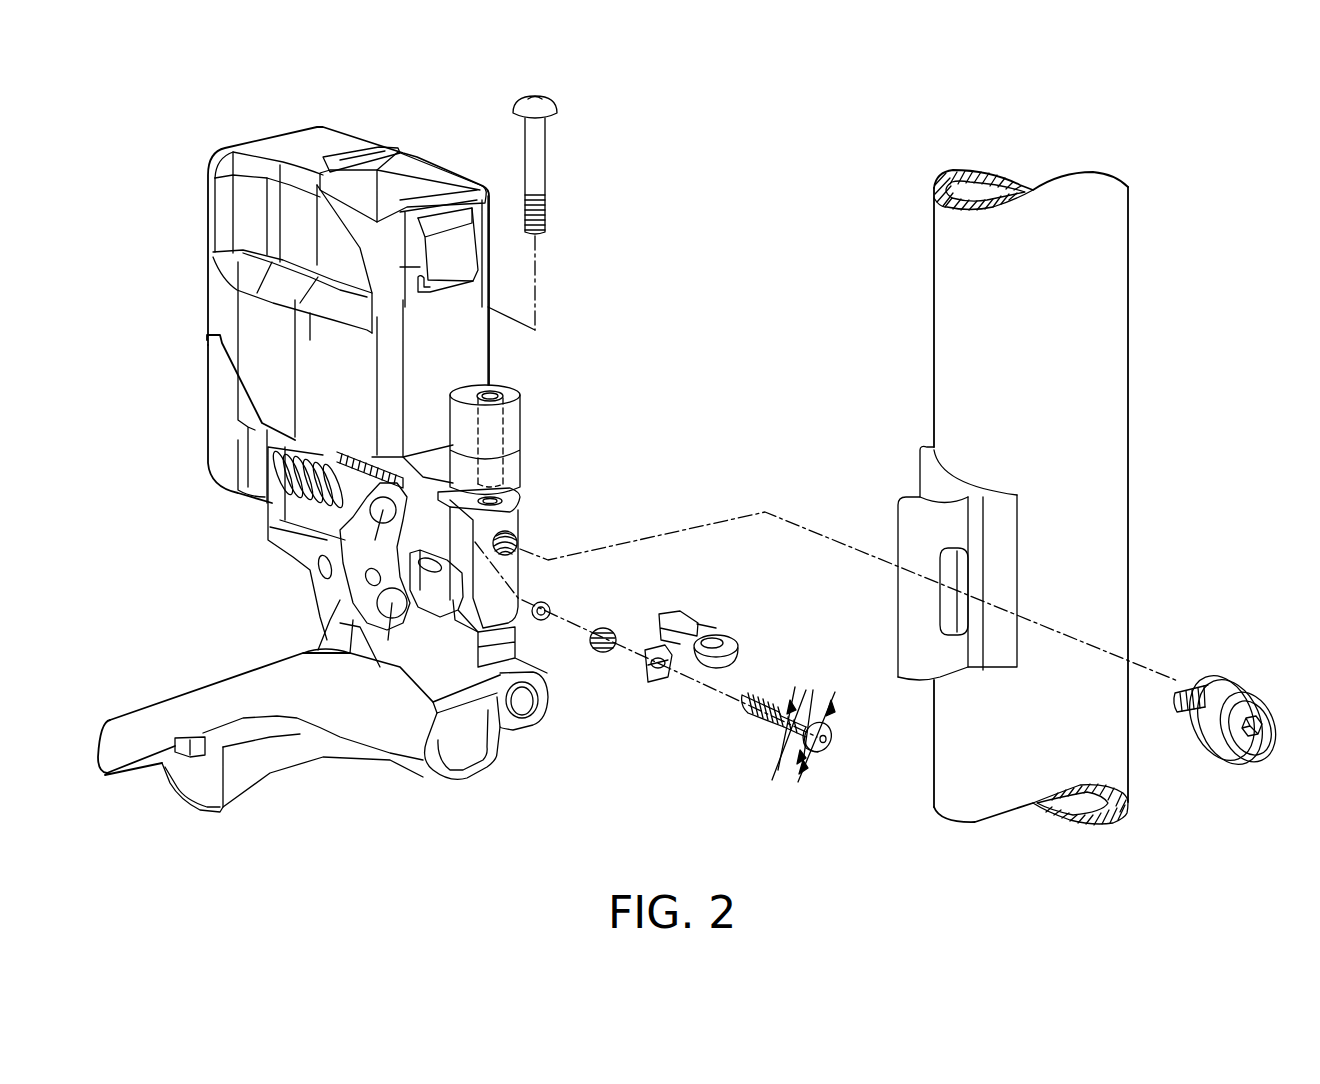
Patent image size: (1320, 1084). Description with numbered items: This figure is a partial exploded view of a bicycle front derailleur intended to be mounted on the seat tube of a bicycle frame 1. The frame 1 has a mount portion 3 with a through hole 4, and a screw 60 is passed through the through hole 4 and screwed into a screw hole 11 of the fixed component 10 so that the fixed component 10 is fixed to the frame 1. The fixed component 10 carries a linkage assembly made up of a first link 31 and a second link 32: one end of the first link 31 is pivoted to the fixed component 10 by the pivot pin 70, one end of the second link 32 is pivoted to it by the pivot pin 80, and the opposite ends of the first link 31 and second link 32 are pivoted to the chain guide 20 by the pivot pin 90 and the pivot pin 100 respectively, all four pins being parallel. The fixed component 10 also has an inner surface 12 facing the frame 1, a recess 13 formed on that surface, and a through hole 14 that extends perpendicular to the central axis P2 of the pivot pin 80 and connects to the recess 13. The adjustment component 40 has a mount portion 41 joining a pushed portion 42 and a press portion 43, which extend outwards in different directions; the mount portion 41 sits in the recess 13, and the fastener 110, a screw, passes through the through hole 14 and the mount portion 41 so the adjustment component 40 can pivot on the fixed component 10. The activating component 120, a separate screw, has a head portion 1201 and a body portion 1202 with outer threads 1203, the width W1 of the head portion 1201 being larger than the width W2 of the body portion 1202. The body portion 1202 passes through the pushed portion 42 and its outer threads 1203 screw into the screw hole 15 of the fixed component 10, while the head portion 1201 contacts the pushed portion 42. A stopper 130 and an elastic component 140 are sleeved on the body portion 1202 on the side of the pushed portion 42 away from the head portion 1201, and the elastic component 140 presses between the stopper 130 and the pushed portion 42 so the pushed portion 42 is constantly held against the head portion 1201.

The frame 1 is at (1112, 463).
The mount portion 3 is at (937, 587).
The through hole 4 is at (962, 620).
The fixed component 10 is at (521, 458).
The screw hole 11 is at (517, 540).
The inner surface 12 is at (521, 419).
The recess 13 is at (521, 492).
The through hole 14 is at (487, 445).
The screw hole 15 is at (346, 446).
The chain guide 20 is at (190, 694).
The first link 31 is at (500, 652).
The second link 32 is at (280, 525).
The adjustment component 40 is at (714, 638).
The mount portion 41 is at (729, 636).
The pushed portion 42 is at (685, 650).
The press portion 43 is at (681, 618).
The screw 60 is at (1262, 742).
The pivot pin 70 is at (440, 572).
The pivot pin 80 is at (318, 583).
The pivot pin 90 is at (527, 700).
The pivot pin 100 is at (318, 650).
The fastener 110 is at (546, 106).
The activating component 120 is at (781, 739).
The stopper 130 is at (549, 605).
The elastic component 140 is at (604, 652).
The head portion 1201 is at (838, 765).
The body portion 1202 is at (780, 731).
The outer threads 1203 is at (762, 700).
The central axis P2 is at (292, 553).
The width of the head portion W1 is at (836, 728).
The width of the body portion W2 is at (798, 713).